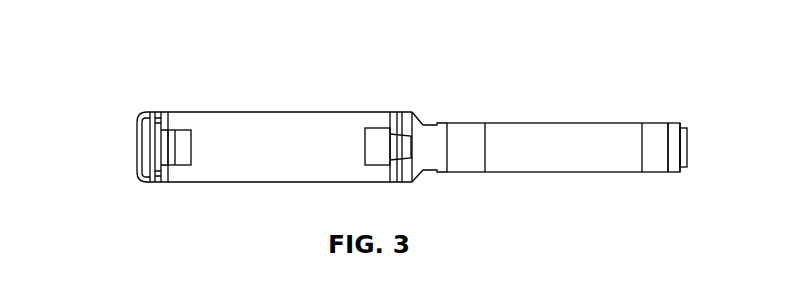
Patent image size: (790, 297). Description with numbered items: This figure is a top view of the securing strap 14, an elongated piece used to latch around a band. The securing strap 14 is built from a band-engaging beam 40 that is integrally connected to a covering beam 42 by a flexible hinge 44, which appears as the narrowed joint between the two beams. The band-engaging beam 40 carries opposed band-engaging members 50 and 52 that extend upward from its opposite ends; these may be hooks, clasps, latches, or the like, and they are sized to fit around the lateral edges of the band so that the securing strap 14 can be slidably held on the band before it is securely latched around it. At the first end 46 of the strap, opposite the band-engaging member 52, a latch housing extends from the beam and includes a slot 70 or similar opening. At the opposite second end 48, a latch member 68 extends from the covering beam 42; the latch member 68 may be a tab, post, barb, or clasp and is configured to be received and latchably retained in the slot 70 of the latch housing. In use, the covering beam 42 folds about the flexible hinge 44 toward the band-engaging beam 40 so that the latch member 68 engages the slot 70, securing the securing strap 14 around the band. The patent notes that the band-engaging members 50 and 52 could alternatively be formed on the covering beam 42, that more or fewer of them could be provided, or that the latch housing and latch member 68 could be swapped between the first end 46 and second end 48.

The securing strap 14 is at (178, 78).
The band-engaging beam 40 is at (262, 117).
The covering beam 42 is at (557, 122).
The flexible hinge 44 is at (421, 123).
The first end 46 is at (137, 150).
The second end 48 is at (687, 147).
The band-engaging member 50 is at (183, 155).
The band-engaging member 52 is at (383, 128).
The latch member 68 is at (677, 123).
The slot 70 is at (157, 140).